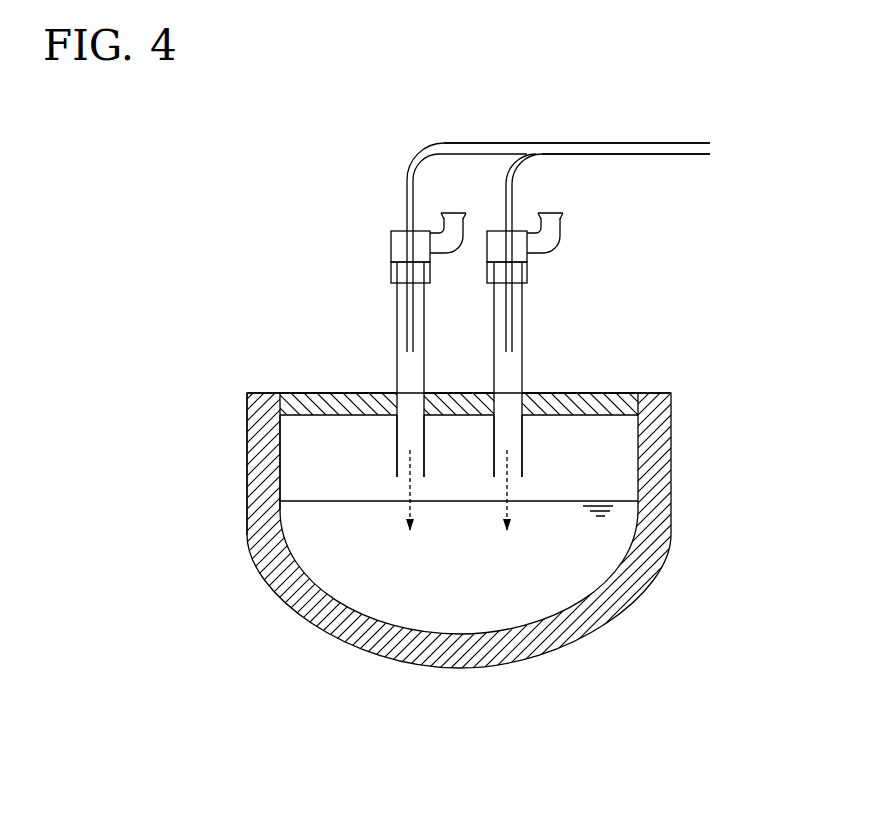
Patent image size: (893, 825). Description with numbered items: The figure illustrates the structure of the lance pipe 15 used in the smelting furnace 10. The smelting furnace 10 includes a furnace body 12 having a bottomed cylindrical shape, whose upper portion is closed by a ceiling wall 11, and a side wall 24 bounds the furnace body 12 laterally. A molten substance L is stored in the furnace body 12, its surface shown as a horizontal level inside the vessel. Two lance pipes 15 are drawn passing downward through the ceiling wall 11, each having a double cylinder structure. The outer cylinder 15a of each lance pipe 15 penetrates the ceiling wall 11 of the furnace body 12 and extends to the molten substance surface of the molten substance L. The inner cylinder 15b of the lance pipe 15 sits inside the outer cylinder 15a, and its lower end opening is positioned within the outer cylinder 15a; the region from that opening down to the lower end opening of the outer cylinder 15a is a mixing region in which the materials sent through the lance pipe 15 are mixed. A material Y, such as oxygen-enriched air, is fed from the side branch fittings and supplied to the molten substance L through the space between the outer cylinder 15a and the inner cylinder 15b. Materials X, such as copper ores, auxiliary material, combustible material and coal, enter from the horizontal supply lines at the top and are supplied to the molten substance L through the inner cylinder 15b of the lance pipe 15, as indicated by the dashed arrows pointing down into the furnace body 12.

The smelting furnace 10 is at (278, 195).
The ceiling wall 11 is at (300, 392).
The furnace body 12 is at (678, 468).
The lance pipe 15 is at (390, 433).
The outer cylinder 15a is at (395, 357).
The inner cylinder 15b is at (404, 297).
The side wall 24 is at (246, 452).
The molten substance L is at (570, 572).
The materials X is at (722, 148).
The material Y is at (452, 226).